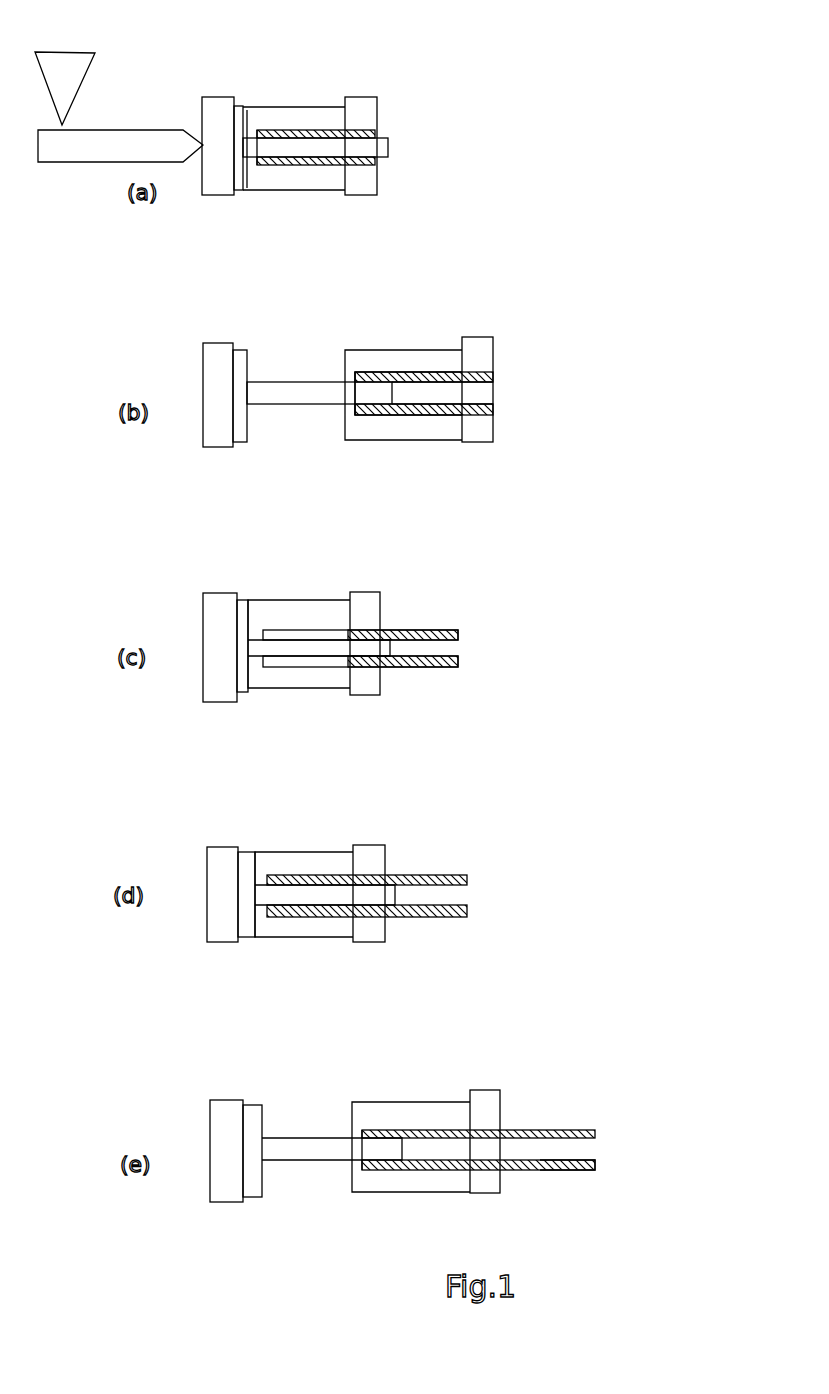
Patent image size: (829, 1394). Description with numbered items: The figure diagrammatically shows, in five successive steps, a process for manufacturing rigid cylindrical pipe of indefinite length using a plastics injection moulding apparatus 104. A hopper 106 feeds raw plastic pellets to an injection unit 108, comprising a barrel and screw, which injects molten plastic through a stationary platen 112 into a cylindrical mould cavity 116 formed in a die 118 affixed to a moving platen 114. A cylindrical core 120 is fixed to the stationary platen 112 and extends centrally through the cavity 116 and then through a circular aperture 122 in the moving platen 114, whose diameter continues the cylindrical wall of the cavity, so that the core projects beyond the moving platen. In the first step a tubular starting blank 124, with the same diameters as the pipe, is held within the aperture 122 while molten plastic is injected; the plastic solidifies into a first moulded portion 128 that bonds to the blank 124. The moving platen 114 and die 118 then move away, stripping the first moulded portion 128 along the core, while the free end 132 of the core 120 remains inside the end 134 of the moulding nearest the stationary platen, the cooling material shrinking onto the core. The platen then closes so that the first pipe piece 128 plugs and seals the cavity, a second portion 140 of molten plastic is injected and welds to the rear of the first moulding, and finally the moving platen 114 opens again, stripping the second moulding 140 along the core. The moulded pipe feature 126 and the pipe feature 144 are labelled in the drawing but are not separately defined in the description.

The plastics injection moulding apparatus 104 is at (268, 52).
The hopper 106 is at (88, 78).
The injection unit 108 is at (118, 131).
The stationary platen 112 is at (215, 198).
The moving platen 114 is at (357, 197).
The mould cavity 116 is at (297, 130).
The die 118 is at (290, 192).
The core 120 is at (295, 378).
The circular aperture 122 is at (482, 395).
The tubular starting blank 124 is at (360, 128).
The molded part 126 is at (298, 630).
The first moulded portion 128 is at (420, 370).
The free end of the core 132 is at (390, 145).
The end of the first moulded portion 134 is at (348, 422).
The second portion of molten plastic 140 is at (305, 875).
The end portion 144 is at (522, 1170).